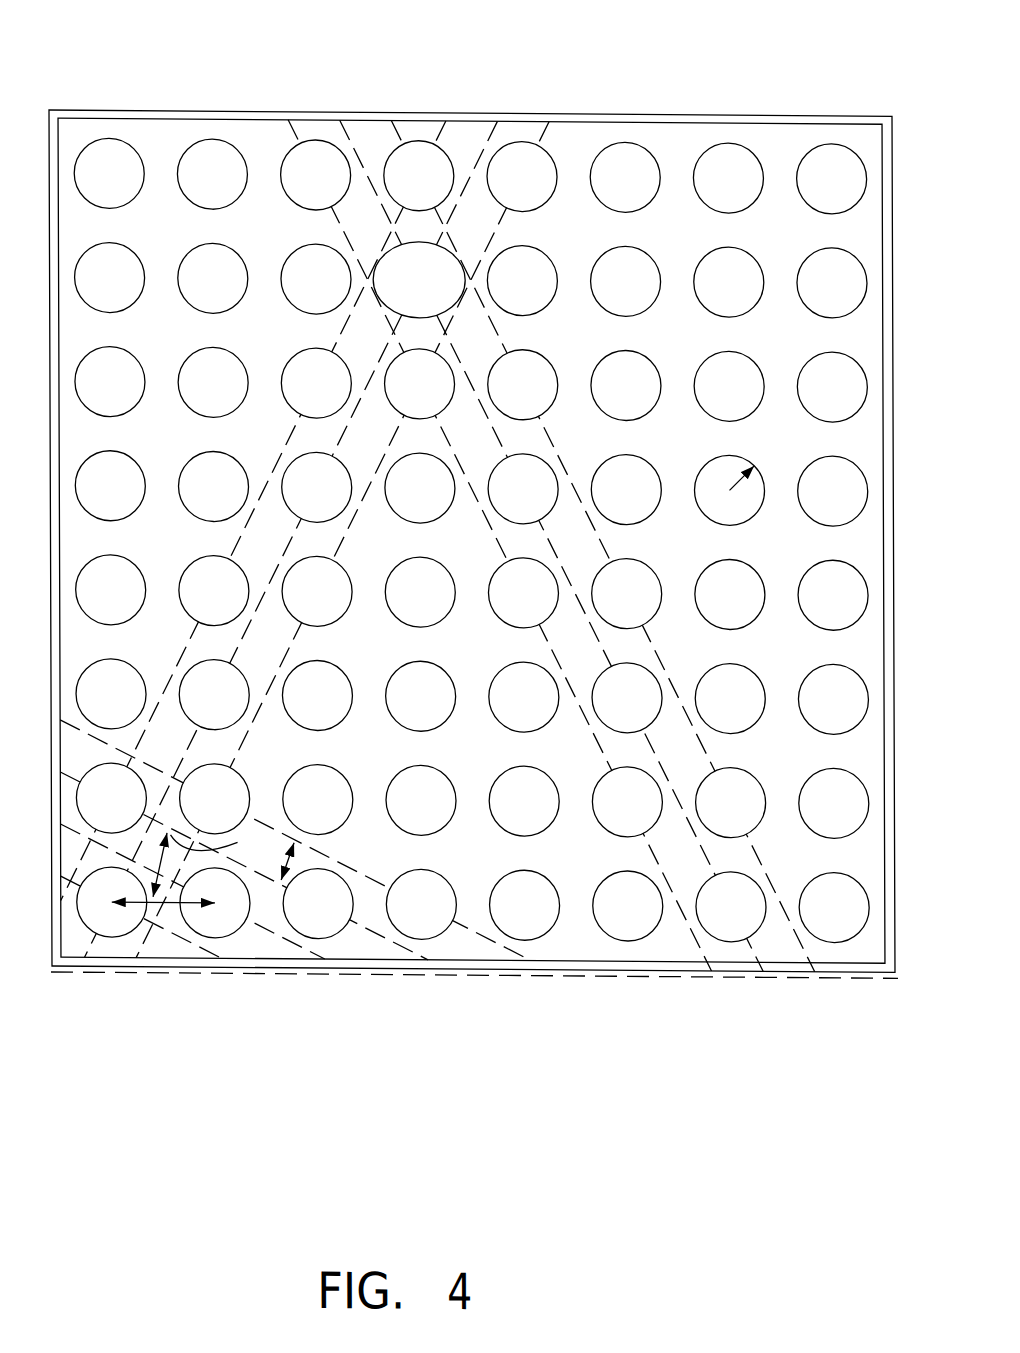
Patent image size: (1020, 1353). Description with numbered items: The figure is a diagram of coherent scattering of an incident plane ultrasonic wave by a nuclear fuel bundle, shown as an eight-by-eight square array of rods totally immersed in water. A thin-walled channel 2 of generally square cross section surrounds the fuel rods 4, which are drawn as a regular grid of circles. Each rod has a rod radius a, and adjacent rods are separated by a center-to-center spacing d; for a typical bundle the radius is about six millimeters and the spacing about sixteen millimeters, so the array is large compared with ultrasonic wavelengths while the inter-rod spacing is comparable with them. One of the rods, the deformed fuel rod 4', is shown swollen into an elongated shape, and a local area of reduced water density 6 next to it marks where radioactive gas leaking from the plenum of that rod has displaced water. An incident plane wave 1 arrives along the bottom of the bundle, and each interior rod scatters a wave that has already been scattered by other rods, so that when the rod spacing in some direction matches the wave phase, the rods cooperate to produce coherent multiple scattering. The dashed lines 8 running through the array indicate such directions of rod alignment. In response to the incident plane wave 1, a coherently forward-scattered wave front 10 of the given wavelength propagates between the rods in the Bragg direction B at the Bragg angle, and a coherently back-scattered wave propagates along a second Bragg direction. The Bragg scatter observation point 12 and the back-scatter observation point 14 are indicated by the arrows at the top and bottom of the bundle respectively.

The incident plane wave 1 is at (368, 973).
The thin-walled channel 2 is at (887, 532).
The fuel rods 4 is at (471, 540).
The deformed fuel rod 4' is at (358, 261).
The local area of reduced water density 6 is at (470, 231).
The diagonal row line 8 is at (559, 456).
The coherently scattered wave front 10 is at (383, 882).
The Bragg scatter observation point 12 is at (450, 110).
The back-scatter observation point 14 is at (812, 966).
The rod radius a is at (728, 480).
The Bragg direction B is at (255, 711).
The center-to-center spacing d is at (170, 903).